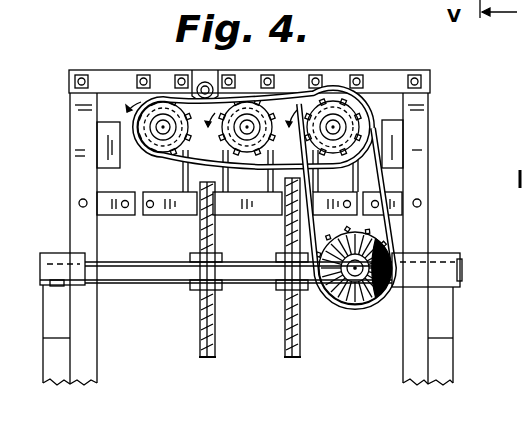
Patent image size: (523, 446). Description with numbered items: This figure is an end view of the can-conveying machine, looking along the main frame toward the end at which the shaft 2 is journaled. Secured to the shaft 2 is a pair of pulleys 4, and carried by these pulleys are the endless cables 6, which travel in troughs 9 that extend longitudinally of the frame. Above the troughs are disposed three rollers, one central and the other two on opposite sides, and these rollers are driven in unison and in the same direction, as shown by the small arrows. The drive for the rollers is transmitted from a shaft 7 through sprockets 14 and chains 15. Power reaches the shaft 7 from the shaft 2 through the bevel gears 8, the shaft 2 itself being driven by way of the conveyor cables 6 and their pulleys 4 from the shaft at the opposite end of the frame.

The shaft 2 is at (137, 273).
The pulleys 4 is at (199, 333).
The endless cables 6 is at (291, 348).
The shaft 7 is at (349, 272).
The bevel gears 8 is at (466, 318).
The troughs 9 is at (182, 175).
The sprockets 14 is at (393, 226).
The chains 15 is at (388, 148).